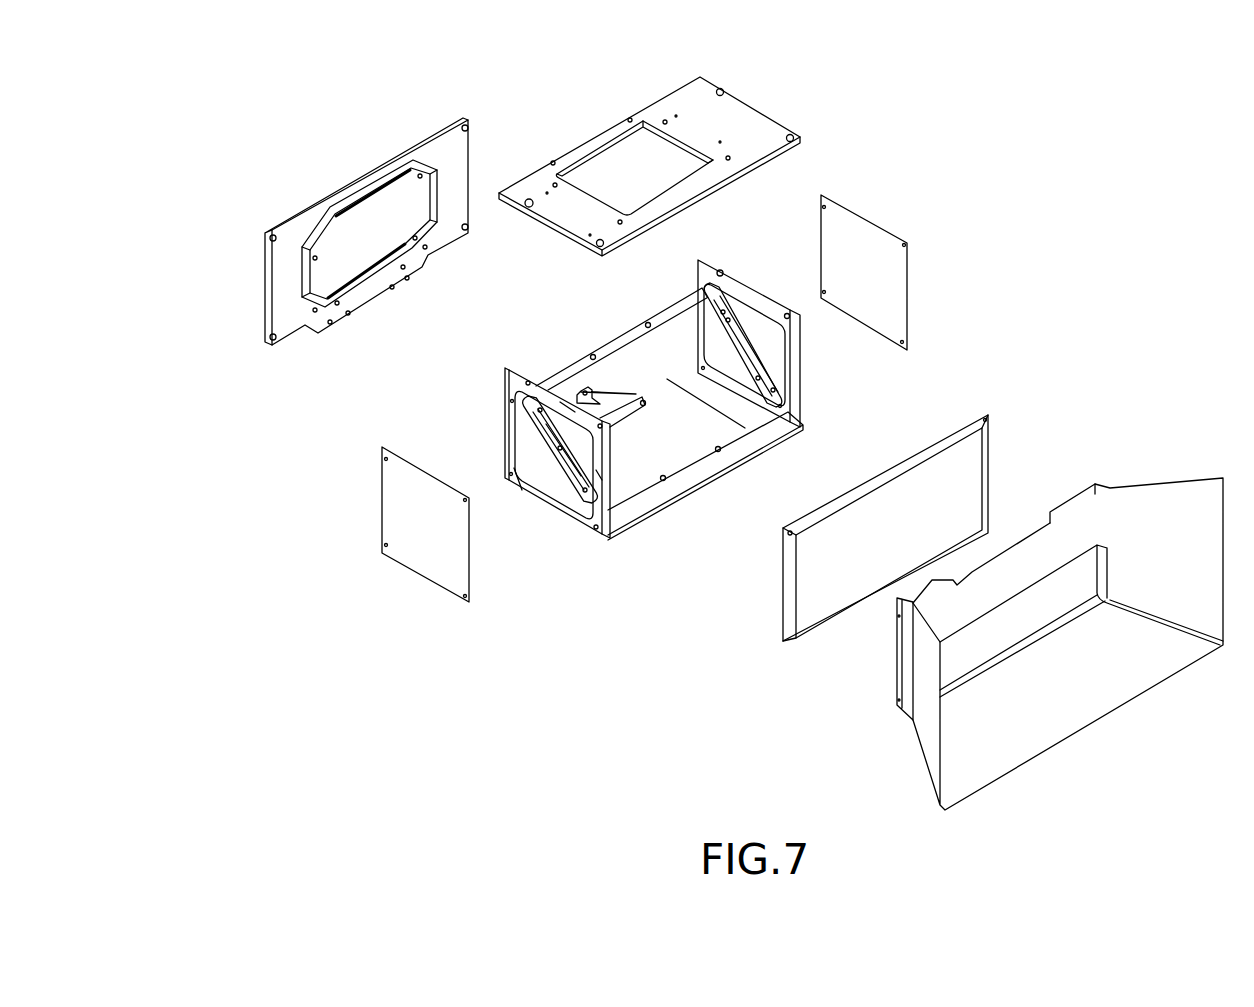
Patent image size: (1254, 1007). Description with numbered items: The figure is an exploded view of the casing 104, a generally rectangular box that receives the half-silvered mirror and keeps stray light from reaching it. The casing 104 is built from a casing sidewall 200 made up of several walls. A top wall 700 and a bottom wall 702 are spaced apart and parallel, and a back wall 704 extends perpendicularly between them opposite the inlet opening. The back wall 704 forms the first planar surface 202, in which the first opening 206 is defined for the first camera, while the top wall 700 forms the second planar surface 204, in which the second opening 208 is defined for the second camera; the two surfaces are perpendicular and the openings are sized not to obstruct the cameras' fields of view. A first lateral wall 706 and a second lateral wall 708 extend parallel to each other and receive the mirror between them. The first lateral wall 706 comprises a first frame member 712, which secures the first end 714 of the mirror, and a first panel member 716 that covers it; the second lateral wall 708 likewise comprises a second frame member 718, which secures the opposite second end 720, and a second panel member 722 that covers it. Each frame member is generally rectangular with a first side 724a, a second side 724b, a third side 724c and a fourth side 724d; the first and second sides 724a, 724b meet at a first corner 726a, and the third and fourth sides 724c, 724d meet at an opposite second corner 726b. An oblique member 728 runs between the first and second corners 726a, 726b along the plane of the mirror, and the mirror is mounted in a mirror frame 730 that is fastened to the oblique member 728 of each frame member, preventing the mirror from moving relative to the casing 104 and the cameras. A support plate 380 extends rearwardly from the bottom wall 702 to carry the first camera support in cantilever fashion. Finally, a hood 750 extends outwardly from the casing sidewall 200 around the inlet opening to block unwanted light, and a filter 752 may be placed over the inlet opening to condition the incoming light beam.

The casing 104 is at (268, 117).
The casing sidewall 200 is at (519, 128).
The first planar surface 202 is at (262, 323).
The second planar surface 204 is at (674, 152).
The first opening 206 is at (358, 214).
The second opening 208 is at (624, 168).
The support plate 380 is at (600, 403).
The top wall 700 is at (760, 122).
The bottom wall 702 is at (670, 493).
The back wall 704 is at (282, 240).
The first lateral wall 706 is at (549, 598).
The second lateral wall 708 is at (910, 222).
The first frame member 712 is at (507, 438).
The first end 714 is at (548, 430).
The first panel member 716 is at (409, 555).
The second frame member 718 is at (800, 326).
The second end 720 is at (740, 352).
The second panel member 722 is at (893, 307).
The first side 724a is at (573, 405).
The second side 724b is at (505, 400).
The third side 724c is at (598, 476).
The fourth side 724d is at (506, 457).
The first corner 726a is at (508, 373).
The second corner 726b is at (598, 536).
The oblique member 728 is at (577, 505).
The mirror frame 730 is at (733, 432).
The hood 750 is at (1157, 503).
The filter 752 is at (962, 470).